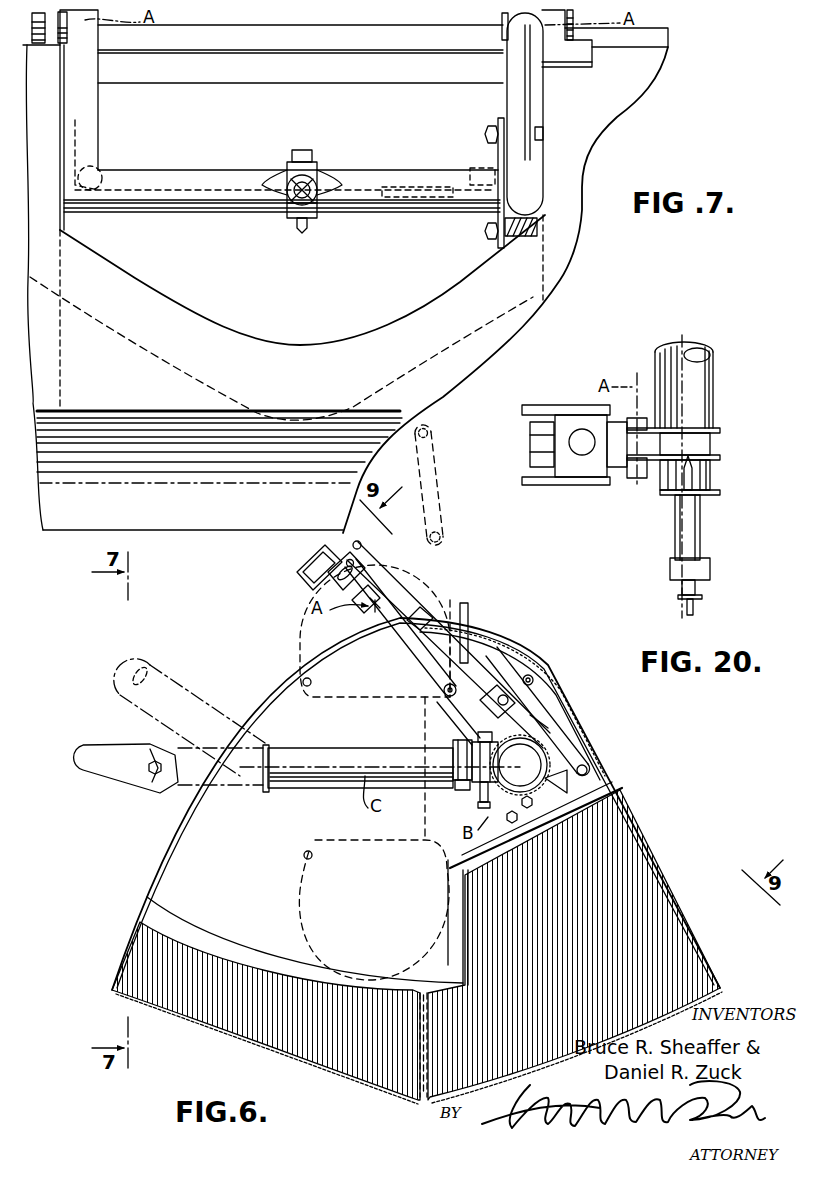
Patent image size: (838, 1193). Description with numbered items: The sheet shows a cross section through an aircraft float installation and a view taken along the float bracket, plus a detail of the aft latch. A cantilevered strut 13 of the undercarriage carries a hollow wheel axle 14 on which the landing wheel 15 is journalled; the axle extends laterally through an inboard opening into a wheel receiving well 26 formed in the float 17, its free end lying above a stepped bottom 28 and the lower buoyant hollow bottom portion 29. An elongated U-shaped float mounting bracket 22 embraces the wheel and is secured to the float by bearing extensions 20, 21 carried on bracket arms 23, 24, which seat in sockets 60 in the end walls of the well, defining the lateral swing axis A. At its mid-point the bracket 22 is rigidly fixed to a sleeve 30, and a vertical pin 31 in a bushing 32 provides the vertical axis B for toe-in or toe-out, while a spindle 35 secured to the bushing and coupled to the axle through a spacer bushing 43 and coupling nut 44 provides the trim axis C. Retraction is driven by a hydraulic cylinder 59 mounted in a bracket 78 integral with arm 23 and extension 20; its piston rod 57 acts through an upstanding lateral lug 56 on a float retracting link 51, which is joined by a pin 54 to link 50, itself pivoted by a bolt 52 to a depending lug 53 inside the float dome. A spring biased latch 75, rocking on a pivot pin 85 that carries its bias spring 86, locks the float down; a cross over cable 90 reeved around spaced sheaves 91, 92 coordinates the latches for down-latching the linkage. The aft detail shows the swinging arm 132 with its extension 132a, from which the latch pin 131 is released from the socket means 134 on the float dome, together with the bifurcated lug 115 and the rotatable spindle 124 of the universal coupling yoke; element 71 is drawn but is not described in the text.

In FIG. 6, the cantilevered strut 13 is at (158, 690).
In FIG. 6, the wheel axle 14 is at (288, 790).
In FIG. 6, the landing wheel 15 is at (305, 890).
In FIG. 7, the float 17 is at (599, 108).
In FIG. 6, the float 17 is at (648, 806).
In FIG. 7, the bearing extension 20 is at (41, 271).
In FIG. 7, the bearing extension 21 is at (502, 15).
In FIG. 7, the float mounting bracket 22 is at (205, 168).
In FIG. 6, the float mounting bracket 22 is at (550, 720).
In FIG. 7, the bracket arm 23 is at (98, 107).
In FIG. 7, the bracket arm 24 is at (507, 100).
In FIG. 7, the wheel receiving well 26 is at (328, 273).
In FIG. 6, the wheel receiving well 26 is at (192, 938).
In FIG. 6, the stepped bottom 28 is at (448, 870).
In FIG. 7, the lower buoyant hollow bottom portion 29 is at (112, 493).
In FIG. 6, the lower buoyant hollow bottom portion 29 is at (672, 937).
In FIG. 7, the sleeve 30 is at (285, 218).
In FIG. 6, the sleeve 30 is at (550, 752).
In FIG. 7, the vertical pin 31 is at (306, 160).
In FIG. 6, the vertical pin 31 is at (497, 832).
In FIG. 7, the bushing 32 is at (291, 162).
In FIG. 6, the bushing 32 is at (478, 762).
In FIG. 6, the spindle 35 is at (480, 805).
In FIG. 6, the spacer bushing 43 is at (458, 791).
In FIG. 6, the coupling nut 44 is at (458, 762).
In FIG. 6, the float retracting link 50 is at (420, 478).
In FIG. 6, the float retracting link 51 is at (432, 568).
In FIG. 6, the pivot bolt 52 is at (531, 676).
In FIG. 6, the depending lug 53 is at (513, 665).
In FIG. 7, the pin 54 is at (485, 134).
In FIG. 6, the pin 54 is at (612, 762).
In FIG. 6, the upstanding lateral lug 56 is at (503, 694).
In FIG. 6, the piston rod 57 is at (468, 673).
In FIG. 6, the hydraulic cylinder 59 is at (320, 555).
In FIG. 7, the socket 60 is at (80, 18).
In FIG. 6, the socket 60 is at (372, 597).
In FIG. 6, the stop 71 is at (470, 622).
In FIG. 7, the latch 75 is at (540, 218).
In FIG. 6, the bracket 78 is at (368, 617).
In FIG. 7, the pivot pin 85 is at (485, 231).
In FIG. 7, the bias spring 86 is at (528, 244).
In FIG. 7, the cross over cable 90 is at (200, 198).
In FIG. 7, the sheave 91 is at (438, 172).
In FIG. 7, the sheave 92 is at (103, 172).
In FIG. 20, the bifurcated lug 115 is at (662, 497).
In FIG. 20, the rotatable spindle 124 is at (530, 447).
In FIG. 20, the latch pin 131 is at (700, 478).
In FIG. 20, the swinging arm 132 is at (715, 395).
In FIG. 20, the extension 132a is at (662, 478).
In FIG. 20, the socket means 134 is at (703, 540).